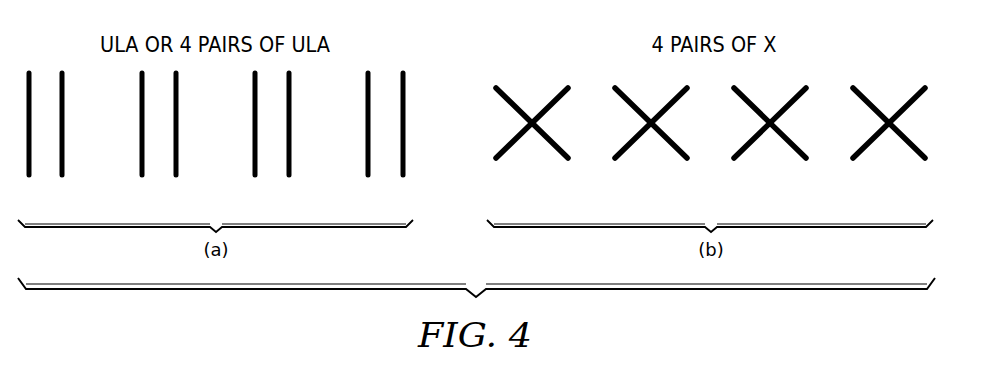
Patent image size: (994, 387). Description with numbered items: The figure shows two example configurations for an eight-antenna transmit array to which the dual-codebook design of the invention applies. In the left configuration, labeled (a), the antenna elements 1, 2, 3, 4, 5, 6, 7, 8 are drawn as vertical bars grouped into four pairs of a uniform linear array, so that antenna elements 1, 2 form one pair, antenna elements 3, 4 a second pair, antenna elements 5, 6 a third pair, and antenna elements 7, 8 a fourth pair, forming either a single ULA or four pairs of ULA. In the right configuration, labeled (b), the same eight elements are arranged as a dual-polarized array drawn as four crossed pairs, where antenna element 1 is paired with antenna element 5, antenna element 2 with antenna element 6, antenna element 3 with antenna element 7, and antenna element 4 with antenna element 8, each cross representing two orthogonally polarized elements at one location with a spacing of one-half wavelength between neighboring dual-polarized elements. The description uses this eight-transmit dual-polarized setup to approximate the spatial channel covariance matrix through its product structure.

The antenna element 1 is at (295, 140).
The antenna element 2 is at (371, 140).
The antenna element 3 is at (471, 140).
The antenna element 4 is at (547, 140).
The antenna element 5 is at (411, 140).
The antenna element 6 is at (487, 140).
The antenna element 7 is at (586, 140).
The antenna element 8 is at (663, 140).